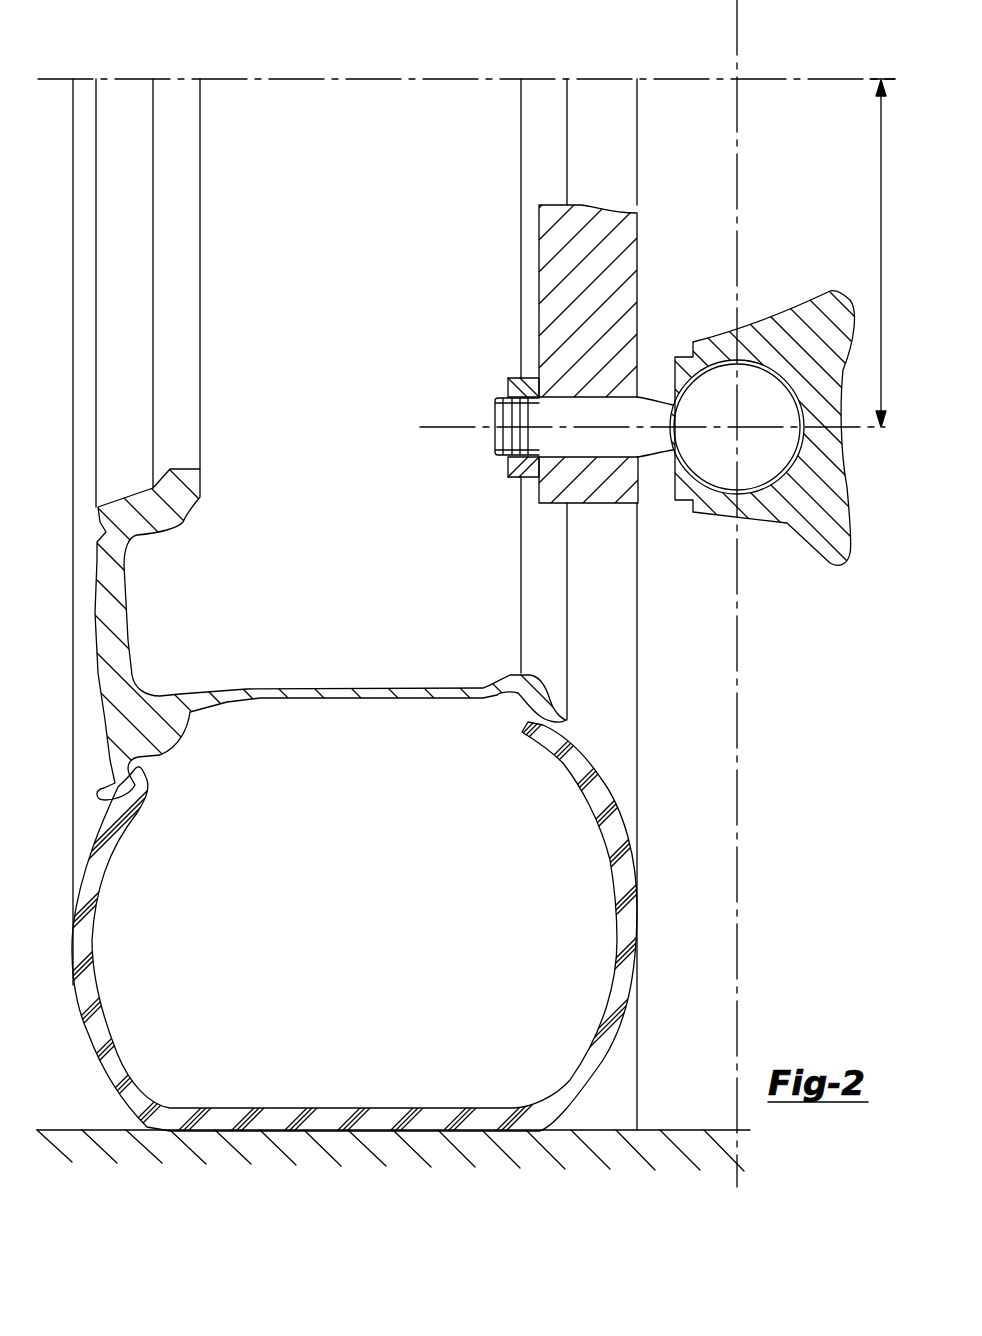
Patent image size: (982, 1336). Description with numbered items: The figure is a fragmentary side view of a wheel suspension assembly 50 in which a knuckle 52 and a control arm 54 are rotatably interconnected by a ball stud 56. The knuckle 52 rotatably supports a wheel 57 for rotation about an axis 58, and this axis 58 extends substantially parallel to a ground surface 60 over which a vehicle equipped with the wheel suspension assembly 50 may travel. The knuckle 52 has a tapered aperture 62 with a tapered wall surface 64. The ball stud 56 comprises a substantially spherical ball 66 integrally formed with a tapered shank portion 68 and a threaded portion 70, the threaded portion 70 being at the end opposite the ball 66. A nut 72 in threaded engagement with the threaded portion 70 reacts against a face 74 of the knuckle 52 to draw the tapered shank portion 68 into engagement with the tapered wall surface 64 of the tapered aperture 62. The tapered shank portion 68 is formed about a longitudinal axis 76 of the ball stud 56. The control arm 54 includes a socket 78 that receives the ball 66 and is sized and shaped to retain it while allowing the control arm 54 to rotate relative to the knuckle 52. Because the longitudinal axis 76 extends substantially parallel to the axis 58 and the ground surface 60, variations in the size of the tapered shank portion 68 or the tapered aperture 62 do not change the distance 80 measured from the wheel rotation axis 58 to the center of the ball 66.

The wheel suspension assembly 50 is at (652, 409).
The knuckle 52 is at (567, 297).
The control arm 54 is at (800, 517).
The ball stud 56 is at (655, 470).
The wheel 57 is at (345, 688).
The axis 58 is at (358, 78).
The ground surface 60 is at (65, 1128).
The tapered aperture 62 is at (577, 400).
The tapered wall surface 64 is at (602, 453).
The ball 66 is at (723, 377).
The tapered shank portion 68 is at (565, 443).
The threaded portion 70 is at (495, 447).
The nut 72 is at (508, 390).
The face 74 is at (530, 490).
The longitudinal axis 76 is at (600, 427).
The socket 78 is at (745, 377).
The distance 80 is at (881, 243).